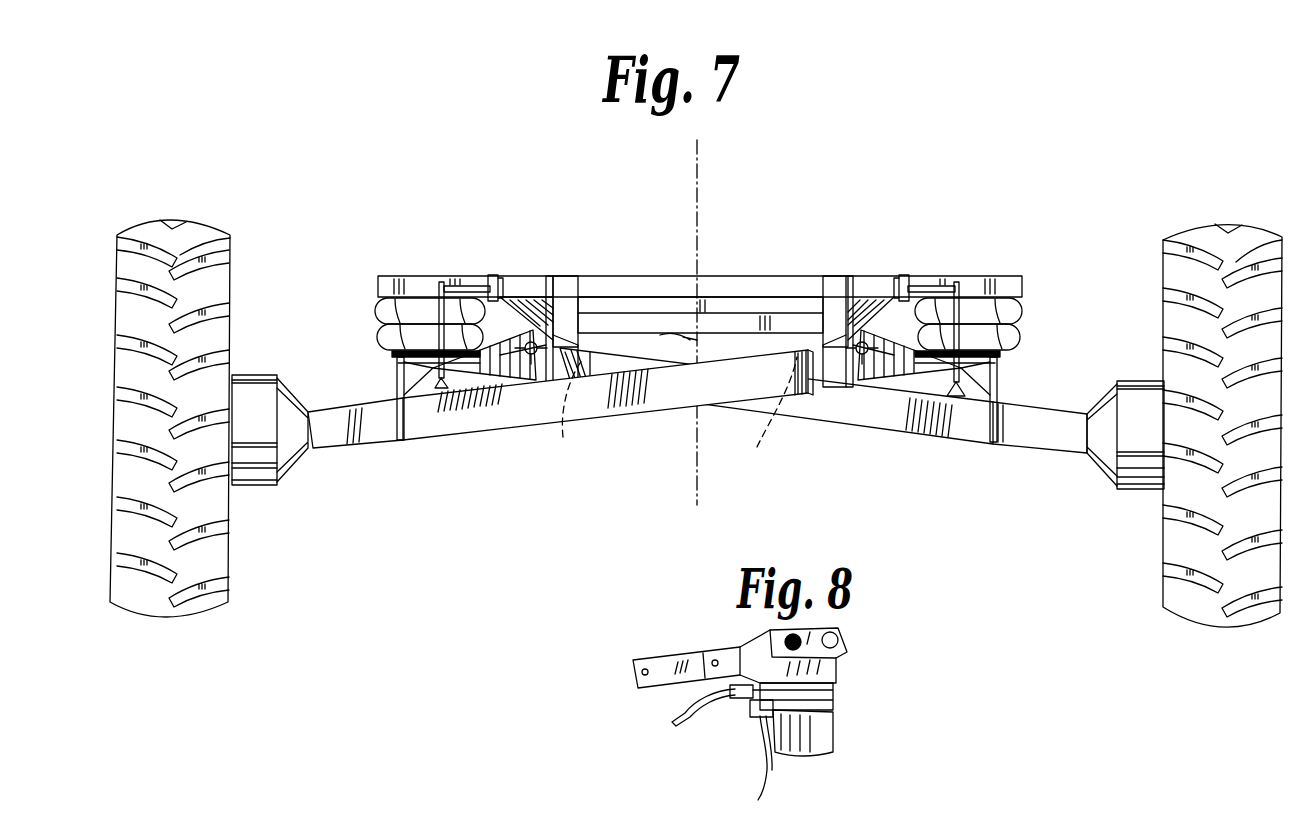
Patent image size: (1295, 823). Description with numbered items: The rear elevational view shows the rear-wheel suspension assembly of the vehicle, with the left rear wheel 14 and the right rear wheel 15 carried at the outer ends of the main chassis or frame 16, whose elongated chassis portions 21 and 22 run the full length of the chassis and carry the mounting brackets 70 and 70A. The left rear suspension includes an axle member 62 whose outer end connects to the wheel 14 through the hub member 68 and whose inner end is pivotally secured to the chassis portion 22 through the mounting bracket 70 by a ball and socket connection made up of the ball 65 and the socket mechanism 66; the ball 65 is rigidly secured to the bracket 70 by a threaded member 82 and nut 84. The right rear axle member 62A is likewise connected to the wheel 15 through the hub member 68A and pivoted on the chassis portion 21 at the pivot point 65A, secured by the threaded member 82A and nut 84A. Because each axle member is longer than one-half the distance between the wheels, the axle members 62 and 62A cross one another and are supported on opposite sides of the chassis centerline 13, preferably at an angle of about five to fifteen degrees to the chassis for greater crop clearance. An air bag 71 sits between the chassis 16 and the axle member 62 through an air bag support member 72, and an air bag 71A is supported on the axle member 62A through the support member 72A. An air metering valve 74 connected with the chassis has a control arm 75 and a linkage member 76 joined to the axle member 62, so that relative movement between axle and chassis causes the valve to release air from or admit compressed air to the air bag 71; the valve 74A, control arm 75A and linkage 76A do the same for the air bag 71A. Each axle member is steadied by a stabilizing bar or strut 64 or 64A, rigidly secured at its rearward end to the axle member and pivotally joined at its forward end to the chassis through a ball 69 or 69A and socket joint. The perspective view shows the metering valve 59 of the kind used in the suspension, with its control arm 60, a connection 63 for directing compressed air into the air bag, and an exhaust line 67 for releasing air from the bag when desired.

In FIG. 7, the chassis centerline 13 is at (700, 190).
In FIG. 7, the left rear wheel 14 is at (213, 600).
In FIG. 7, the right rear wheel 15 is at (1192, 598).
In FIG. 7, the main chassis 16 is at (720, 287).
In FIG. 7, the chassis portion 21 is at (565, 305).
In FIG. 7, the chassis portion 22 is at (833, 277).
In FIG. 8, the air metering valve 59 is at (855, 707).
In FIG. 8, the control arm 60 is at (662, 660).
In FIG. 7, the axle member 62 is at (393, 430).
In FIG. 7, the axle member 62A is at (813, 413).
In FIG. 8, the connection 63 is at (745, 705).
In FIG. 7, the stabilizing bar 64 is at (400, 385).
In FIG. 7, the stabilizing bar 64A is at (945, 398).
In FIG. 7, the ball 65 is at (757, 447).
In FIG. 7, the ball 65A is at (563, 437).
In FIG. 7, the socket mechanism 66 is at (860, 297).
In FIG. 8, the exhaust line 67 is at (690, 705).
In FIG. 7, the hub member 68 is at (276, 487).
In FIG. 7, the hub member 68A is at (1137, 490).
In FIG. 7, the ball 69 is at (400, 385).
In FIG. 7, the ball 69A is at (1010, 340).
In FIG. 7, the mounting bracket 70 is at (823, 305).
In FIG. 7, the mounting bracket 70A is at (533, 307).
In FIG. 7, the air bag 71 is at (377, 303).
In FIG. 7, the air bag 71A is at (1023, 310).
In FIG. 7, the air bag support member 72 is at (402, 390).
In FIG. 7, the air bag support member 72A is at (1010, 383).
In FIG. 7, the air metering valve 74 is at (503, 275).
In FIG. 7, the air metering valve 74A is at (903, 278).
In FIG. 7, the control arm 75 is at (463, 290).
In FIG. 7, the control arm 75A is at (940, 284).
In FIG. 7, the linkage member 76 is at (422, 313).
In FIG. 7, the linkage member 76A is at (975, 303).
In FIG. 7, the threaded member 82 is at (990, 362).
In FIG. 7, the threaded member 82A is at (543, 370).
In FIG. 7, the nut 84 is at (813, 380).
In FIG. 7, the nut 84A is at (520, 400).